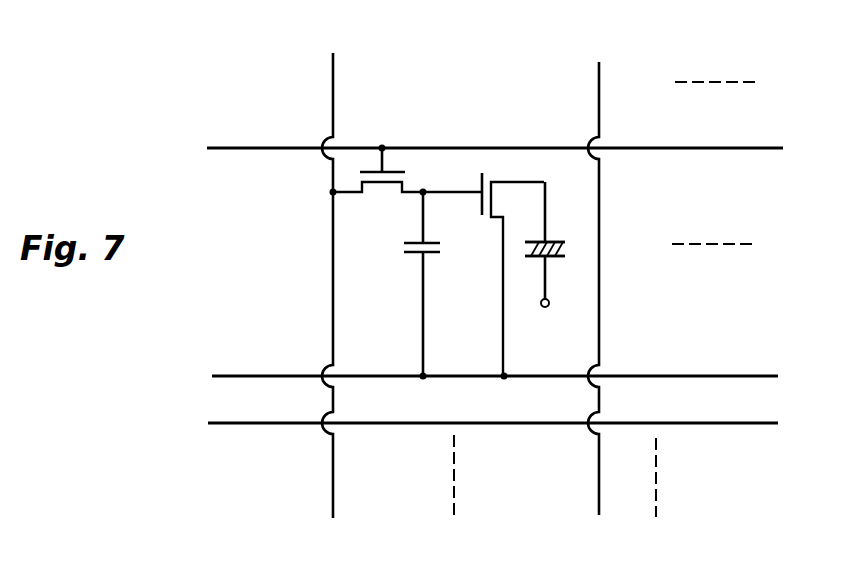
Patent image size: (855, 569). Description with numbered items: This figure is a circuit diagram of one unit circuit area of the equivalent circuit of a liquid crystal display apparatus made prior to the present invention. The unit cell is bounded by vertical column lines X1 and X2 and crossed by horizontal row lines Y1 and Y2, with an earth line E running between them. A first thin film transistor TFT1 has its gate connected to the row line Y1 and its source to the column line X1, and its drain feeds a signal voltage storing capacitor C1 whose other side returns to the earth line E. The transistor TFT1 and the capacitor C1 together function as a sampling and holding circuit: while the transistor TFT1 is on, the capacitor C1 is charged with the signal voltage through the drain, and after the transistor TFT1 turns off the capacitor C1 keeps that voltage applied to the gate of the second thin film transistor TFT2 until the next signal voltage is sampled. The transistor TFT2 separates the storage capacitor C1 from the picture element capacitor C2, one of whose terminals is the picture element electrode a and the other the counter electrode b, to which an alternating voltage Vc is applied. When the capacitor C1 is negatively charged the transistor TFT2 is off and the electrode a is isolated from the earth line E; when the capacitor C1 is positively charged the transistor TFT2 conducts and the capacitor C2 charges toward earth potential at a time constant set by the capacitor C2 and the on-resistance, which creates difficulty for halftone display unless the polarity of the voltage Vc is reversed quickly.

The first column (data) line X1 is at (333, 270).
The second column (data) line X2 is at (594, 269).
The first row (scan) line Y1 is at (477, 144).
The second row (scan) line Y2 is at (469, 425).
The common electrode line E is at (473, 371).
The thin film transistor TFT1 is at (378, 184).
The thin film transistor TFT2 is at (483, 265).
The signal voltage storing capacitor C1 is at (427, 286).
The picture element capacitor C2 is at (556, 240).
The picture element electrode a is at (549, 240).
The counter electrode b is at (561, 258).
The a.c. voltage Vc is at (556, 314).